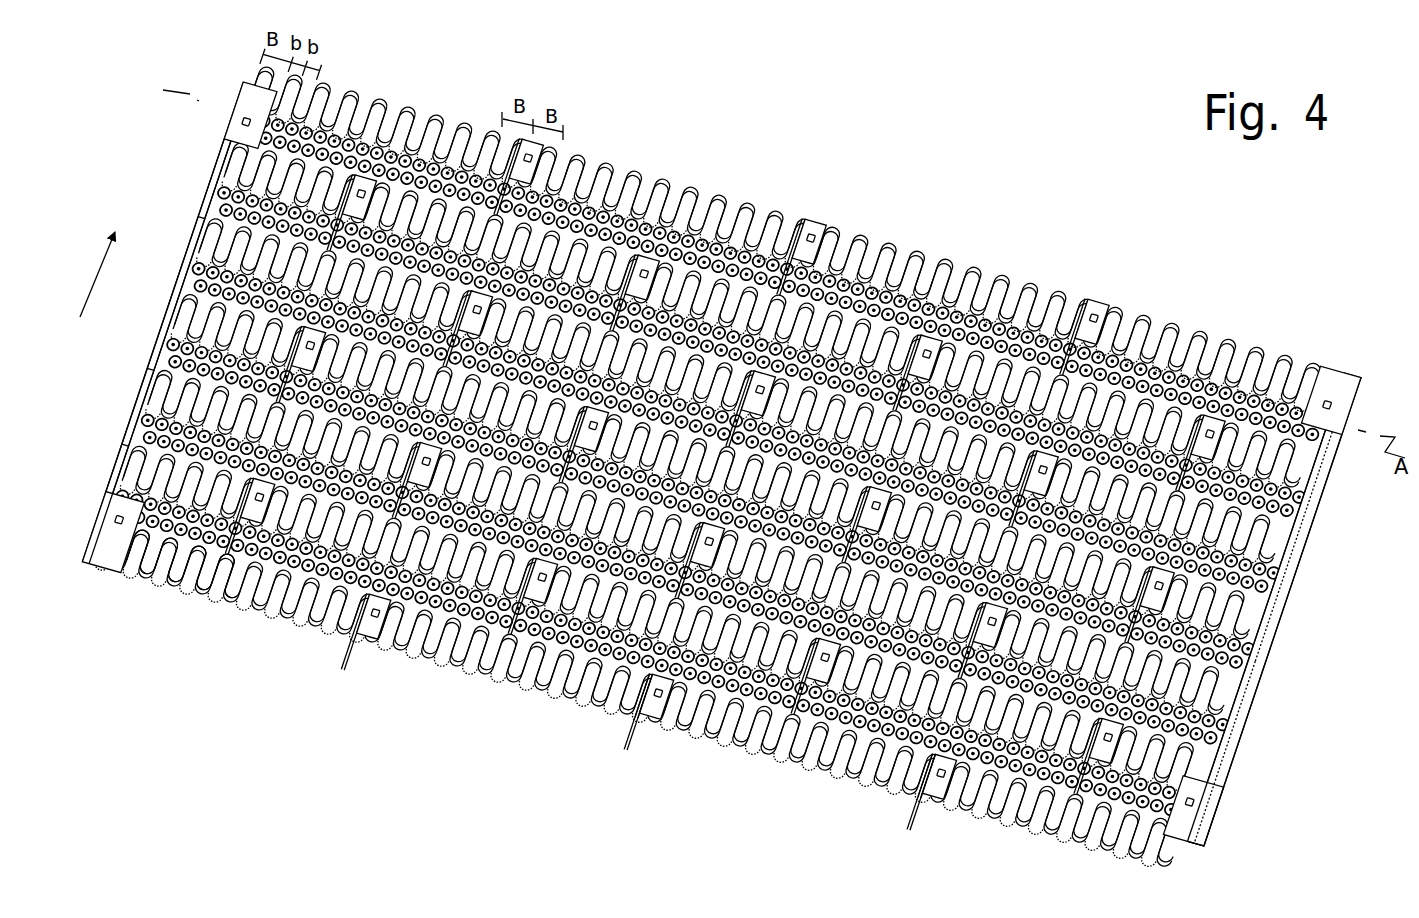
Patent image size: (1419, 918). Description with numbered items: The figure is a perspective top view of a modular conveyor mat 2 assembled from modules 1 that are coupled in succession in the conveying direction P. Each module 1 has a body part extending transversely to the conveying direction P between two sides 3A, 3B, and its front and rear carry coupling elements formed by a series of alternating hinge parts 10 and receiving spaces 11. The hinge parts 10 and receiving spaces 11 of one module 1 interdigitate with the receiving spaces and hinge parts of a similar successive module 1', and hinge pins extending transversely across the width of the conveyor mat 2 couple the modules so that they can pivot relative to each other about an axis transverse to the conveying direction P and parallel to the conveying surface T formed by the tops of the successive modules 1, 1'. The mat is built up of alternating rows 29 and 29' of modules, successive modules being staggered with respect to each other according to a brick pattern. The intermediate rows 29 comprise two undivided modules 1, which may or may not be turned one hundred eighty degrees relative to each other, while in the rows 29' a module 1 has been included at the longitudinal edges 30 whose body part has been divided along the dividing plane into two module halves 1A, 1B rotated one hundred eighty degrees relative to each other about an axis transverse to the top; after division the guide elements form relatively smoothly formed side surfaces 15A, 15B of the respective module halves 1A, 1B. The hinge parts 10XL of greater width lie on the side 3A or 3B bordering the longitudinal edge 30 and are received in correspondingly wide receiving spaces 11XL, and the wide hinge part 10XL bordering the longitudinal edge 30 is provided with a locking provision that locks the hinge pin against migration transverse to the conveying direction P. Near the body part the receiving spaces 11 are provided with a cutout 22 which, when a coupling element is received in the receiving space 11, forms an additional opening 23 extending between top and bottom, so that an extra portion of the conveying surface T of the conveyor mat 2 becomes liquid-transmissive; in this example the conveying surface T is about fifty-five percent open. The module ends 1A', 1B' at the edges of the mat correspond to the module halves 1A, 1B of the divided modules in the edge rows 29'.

The module 1 is at (615, 680).
The similar module successive in conveying direction 1' is at (727, 405).
The module half 1A is at (134, 370).
The first module end 1A' is at (188, 216).
The module half 1B is at (1264, 723).
The second module end 1B' is at (1317, 547).
The modular conveyor mat 2 is at (262, 626).
The side 3A is at (115, 453).
The side 3B is at (1240, 750).
The hinge part 10 is at (128, 564).
The hinge part of greater width 10XL is at (94, 560).
The receiving space 11 is at (117, 568).
The receiving space of greater width 11XL is at (350, 627).
The side surface 15A is at (413, 490).
The side surface 15B is at (952, 652).
The cutout 22 is at (327, 230).
The additional opening 23 is at (260, 242).
The row 29 is at (1268, 815).
The row 29' is at (1300, 752).
The longitudinal edge 30 is at (243, 110).
The conveying surface T is at (750, 378).
The conveying direction P is at (97, 274).